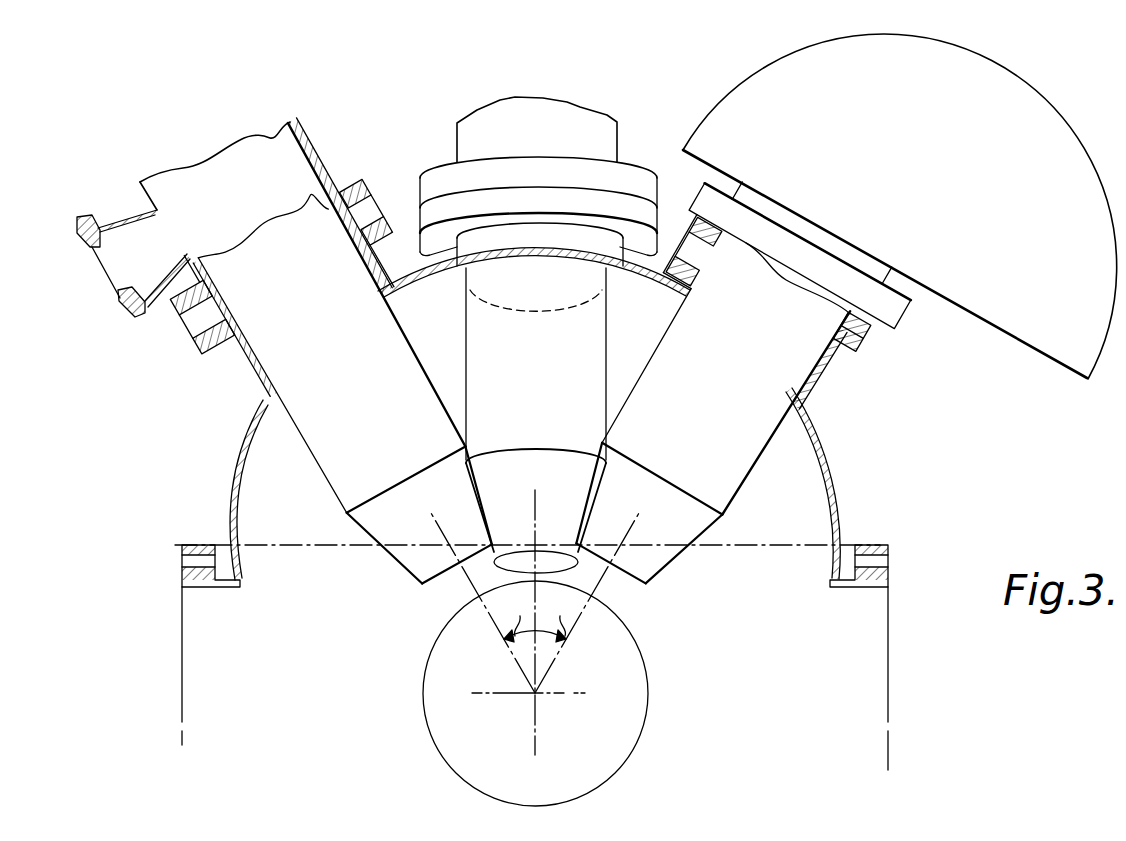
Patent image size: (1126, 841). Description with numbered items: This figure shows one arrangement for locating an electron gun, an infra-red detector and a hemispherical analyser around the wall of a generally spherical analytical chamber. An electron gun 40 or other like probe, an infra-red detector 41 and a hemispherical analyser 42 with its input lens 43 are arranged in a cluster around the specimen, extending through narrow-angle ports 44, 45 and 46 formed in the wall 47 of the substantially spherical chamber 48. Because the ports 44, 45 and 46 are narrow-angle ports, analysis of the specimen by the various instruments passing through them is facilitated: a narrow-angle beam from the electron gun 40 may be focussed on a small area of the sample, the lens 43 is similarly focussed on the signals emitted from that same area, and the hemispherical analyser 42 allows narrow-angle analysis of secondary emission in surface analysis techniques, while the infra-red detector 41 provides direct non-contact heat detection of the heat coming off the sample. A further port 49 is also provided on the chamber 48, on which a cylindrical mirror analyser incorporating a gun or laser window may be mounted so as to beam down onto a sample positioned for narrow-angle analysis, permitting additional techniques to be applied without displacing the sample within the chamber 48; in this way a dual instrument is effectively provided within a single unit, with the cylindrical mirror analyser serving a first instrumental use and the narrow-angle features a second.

The electron gun 40 is at (366, 405).
The infra-red detector 41 is at (552, 388).
The hemispherical analyser 42 is at (916, 176).
The input lens 43 is at (732, 401).
The port 44 is at (338, 195).
The port 45 is at (633, 185).
The port 46 is at (878, 352).
The wall 47 is at (833, 470).
The chamber 48 is at (348, 645).
The further port 49 is at (635, 722).